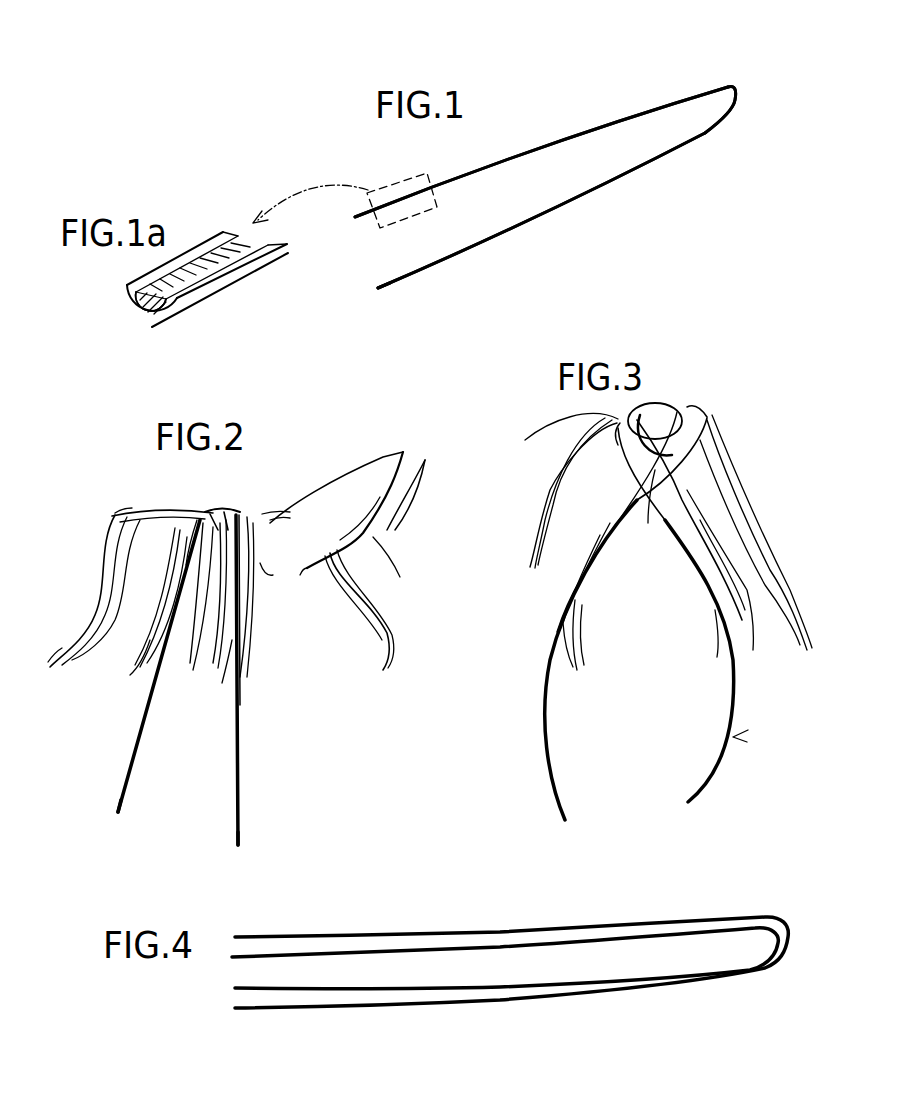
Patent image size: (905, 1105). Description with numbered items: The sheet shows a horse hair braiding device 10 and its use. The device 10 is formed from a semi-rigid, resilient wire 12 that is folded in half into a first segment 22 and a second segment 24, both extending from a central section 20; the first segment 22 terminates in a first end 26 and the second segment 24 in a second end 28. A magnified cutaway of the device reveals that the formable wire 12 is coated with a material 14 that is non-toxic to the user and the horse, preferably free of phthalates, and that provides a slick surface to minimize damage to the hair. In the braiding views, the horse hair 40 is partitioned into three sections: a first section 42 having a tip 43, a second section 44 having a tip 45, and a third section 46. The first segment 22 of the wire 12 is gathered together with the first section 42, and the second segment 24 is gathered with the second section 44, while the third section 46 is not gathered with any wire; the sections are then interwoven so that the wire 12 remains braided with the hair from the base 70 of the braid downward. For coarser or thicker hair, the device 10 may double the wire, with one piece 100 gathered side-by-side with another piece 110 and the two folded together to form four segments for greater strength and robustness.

In FIG. 1, the device 10 is at (633, 93).
In FIG. 1, the wire 12 is at (458, 258).
In FIG. 1a, the wire 12 is at (147, 312).
In FIG. 3, the wire 12 is at (733, 737).
In FIG. 1a, the coating material 14 is at (202, 295).
In FIG. 1, the central section 20 is at (736, 97).
In FIG. 2, the central section 20 is at (213, 527).
In FIG. 1, the first segment 22 is at (465, 167).
In FIG. 2, the first segment 22 is at (240, 762).
In FIG. 3, the first segment 22 is at (540, 727).
In FIG. 1, the second segment 24 is at (652, 175).
In FIG. 2, the second segment 24 is at (138, 710).
In FIG. 3, the second segment 24 is at (737, 697).
In FIG. 1, the first end 26 is at (350, 222).
In FIG. 2, the first end 26 is at (247, 845).
In FIG. 1, the second end 28 is at (378, 291).
In FIG. 2, the second end 28 is at (112, 812).
In FIG. 2, the horse hair 40 is at (245, 500).
In FIG. 2, the first section 42 is at (253, 640).
In FIG. 3, the first section 42 is at (557, 612).
In FIG. 2, the tip 43 is at (223, 687).
In FIG. 2, the second section 44 is at (168, 573).
In FIG. 3, the second section 44 is at (645, 523).
In FIG. 2, the tip 45 is at (130, 675).
In FIG. 2, the third section 46 is at (215, 547).
In FIG. 3, the third section 46 is at (730, 513).
In FIG. 3, the base 70 is at (663, 397).
In FIG. 4, the piece of wire 100 is at (500, 933).
In FIG. 4, the piece of wire 110 is at (512, 1002).